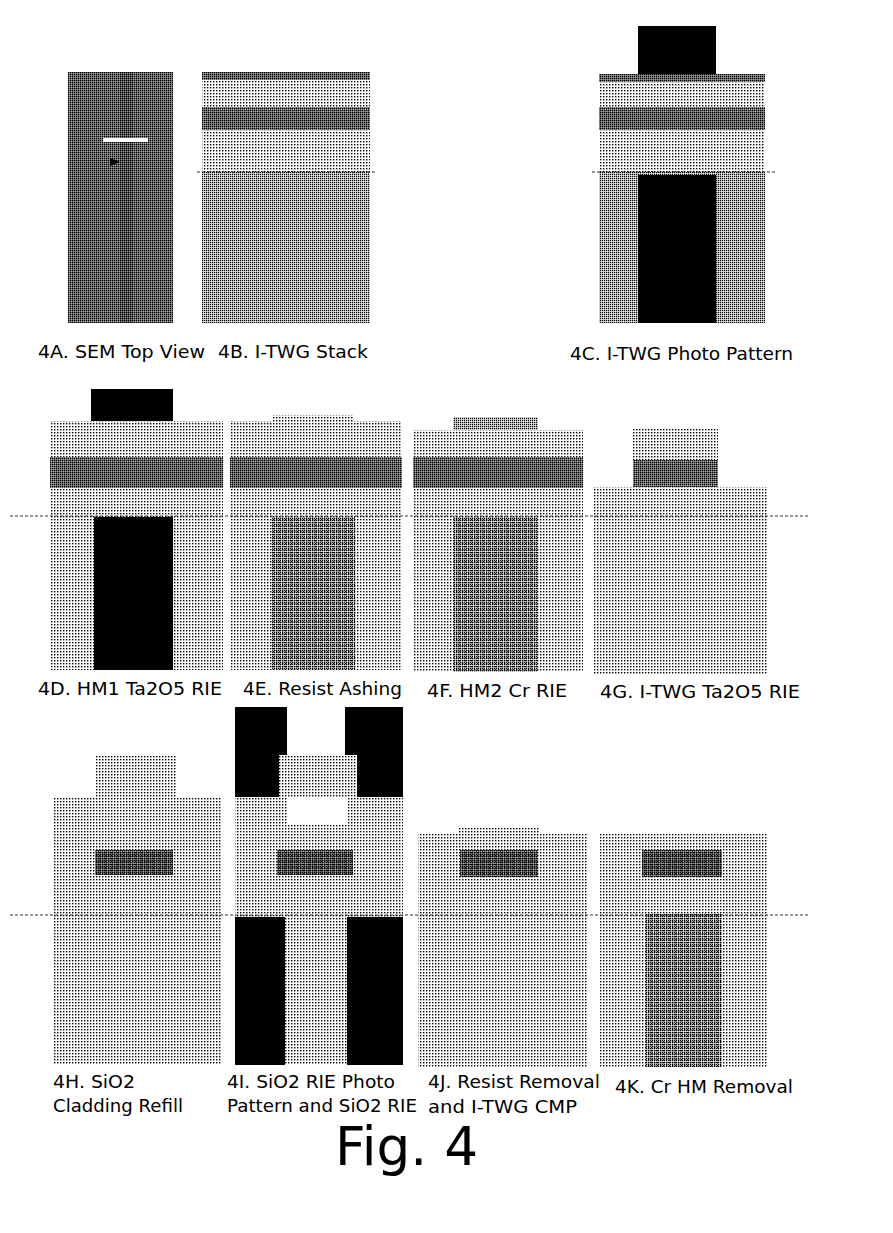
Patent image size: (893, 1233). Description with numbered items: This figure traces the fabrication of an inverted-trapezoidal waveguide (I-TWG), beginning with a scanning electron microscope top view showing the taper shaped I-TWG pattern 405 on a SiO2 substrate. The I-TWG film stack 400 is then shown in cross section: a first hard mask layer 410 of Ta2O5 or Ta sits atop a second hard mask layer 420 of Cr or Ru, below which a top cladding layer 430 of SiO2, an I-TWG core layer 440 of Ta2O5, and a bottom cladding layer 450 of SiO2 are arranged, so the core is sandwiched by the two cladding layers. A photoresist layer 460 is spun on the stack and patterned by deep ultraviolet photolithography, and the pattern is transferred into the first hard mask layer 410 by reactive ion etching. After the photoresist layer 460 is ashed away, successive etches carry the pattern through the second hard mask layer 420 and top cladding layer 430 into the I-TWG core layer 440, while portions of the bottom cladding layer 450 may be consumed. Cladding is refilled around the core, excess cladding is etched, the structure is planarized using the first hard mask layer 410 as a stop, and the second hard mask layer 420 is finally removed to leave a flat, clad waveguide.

In FIG. 4B, the I-TWG stack 400 is at (330, 177).
In FIG. 4A, the taper shaped I-TWG pattern 405 is at (68, 127).
In FIG. 4B, the first hard mask layer (HM1) 410 is at (373, 76).
In FIG. 4B, the second hard mask layer (HM2) 420 is at (373, 85).
In FIG. 4B, the top cladding layer 430 is at (373, 100).
In FIG. 4B, the I-TWG core layer 440 is at (373, 120).
In FIG. 4B, the bottom cladding layer 450 is at (373, 150).
In FIG. 4C, the photoresist layer 460 is at (629, 39).